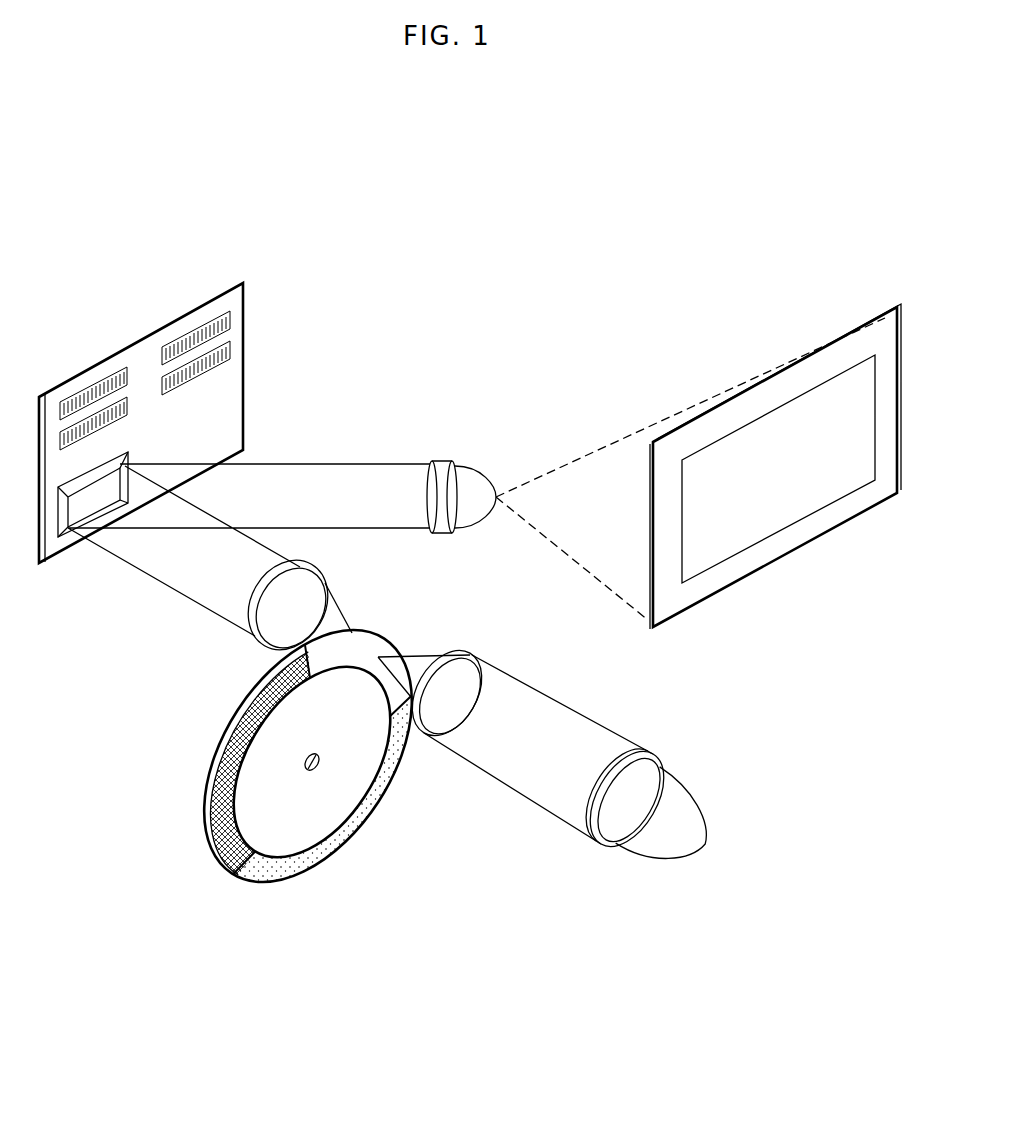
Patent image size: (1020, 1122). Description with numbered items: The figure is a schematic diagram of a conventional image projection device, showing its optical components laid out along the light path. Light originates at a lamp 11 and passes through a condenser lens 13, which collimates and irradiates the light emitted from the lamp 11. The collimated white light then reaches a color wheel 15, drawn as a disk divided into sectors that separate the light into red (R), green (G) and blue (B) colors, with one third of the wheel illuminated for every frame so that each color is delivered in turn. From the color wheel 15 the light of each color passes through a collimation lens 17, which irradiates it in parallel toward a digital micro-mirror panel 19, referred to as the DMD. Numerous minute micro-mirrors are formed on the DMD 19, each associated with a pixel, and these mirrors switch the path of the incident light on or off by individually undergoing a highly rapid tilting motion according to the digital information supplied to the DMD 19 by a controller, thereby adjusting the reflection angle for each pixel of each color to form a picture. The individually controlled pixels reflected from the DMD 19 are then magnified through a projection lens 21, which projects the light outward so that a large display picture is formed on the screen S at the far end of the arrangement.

The lamp 11 is at (676, 795).
The condenser lens 13 is at (472, 653).
The color wheel 15 is at (307, 755).
The collimation lens 17 is at (257, 641).
The digital micro-mirror panel 19 is at (65, 536).
The projection lens 21 is at (440, 467).
The screen S is at (765, 397).
The blue color B is at (377, 642).
The green color G is at (212, 852).
The red color R is at (330, 857).